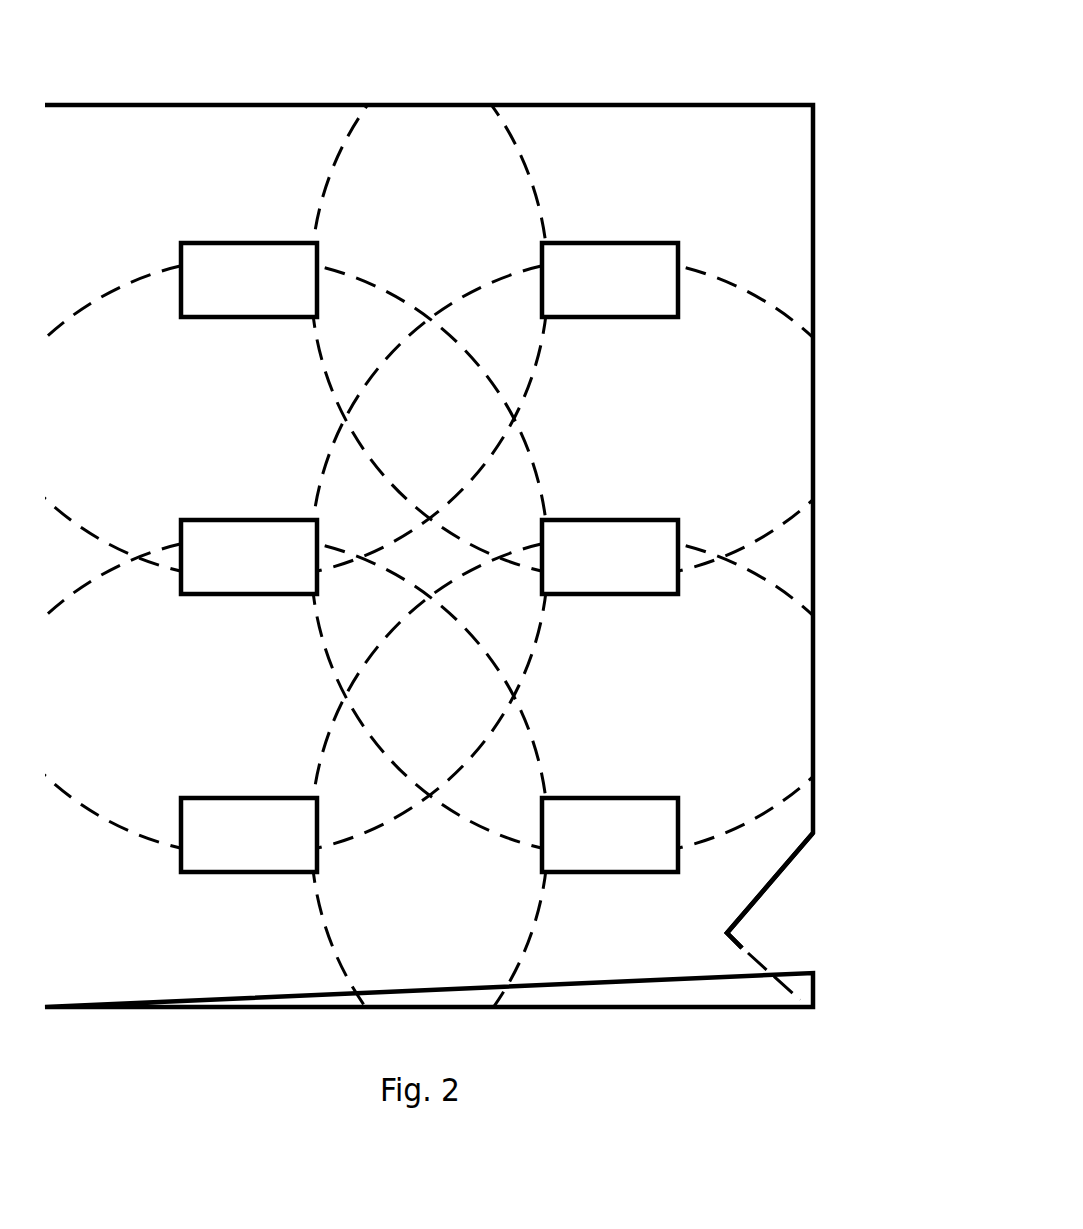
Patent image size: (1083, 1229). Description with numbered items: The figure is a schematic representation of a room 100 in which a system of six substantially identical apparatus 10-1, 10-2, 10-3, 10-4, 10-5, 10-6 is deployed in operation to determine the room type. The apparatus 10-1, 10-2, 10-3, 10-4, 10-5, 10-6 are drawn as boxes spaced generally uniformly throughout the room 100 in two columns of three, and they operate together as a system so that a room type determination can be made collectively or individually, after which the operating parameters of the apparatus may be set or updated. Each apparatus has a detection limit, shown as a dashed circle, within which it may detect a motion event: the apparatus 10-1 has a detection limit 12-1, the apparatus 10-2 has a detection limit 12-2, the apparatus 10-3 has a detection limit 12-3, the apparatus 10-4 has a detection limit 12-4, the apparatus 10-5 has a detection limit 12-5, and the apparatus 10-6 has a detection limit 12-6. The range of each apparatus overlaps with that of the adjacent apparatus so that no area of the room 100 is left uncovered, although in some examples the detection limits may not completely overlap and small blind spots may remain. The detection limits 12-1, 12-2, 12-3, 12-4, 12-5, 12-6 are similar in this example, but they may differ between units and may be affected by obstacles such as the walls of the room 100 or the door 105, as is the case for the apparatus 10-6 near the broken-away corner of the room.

The room 100 is at (732, 105).
The door 105 is at (765, 896).
The apparatus 10-1 is at (249, 280).
The apparatus 10-2 is at (610, 280).
The apparatus 10-3 is at (249, 557).
The apparatus 10-4 is at (610, 557).
The apparatus 10-5 is at (249, 835).
The apparatus 10-6 is at (610, 835).
The detection limit 12-1 is at (522, 157).
The detection limit 12-2 is at (343, 140).
The detection limit 12-3 is at (85, 302).
The detection limit 12-4 is at (763, 298).
The detection limit 12-5 is at (83, 582).
The detection limit 12-6 is at (763, 577).